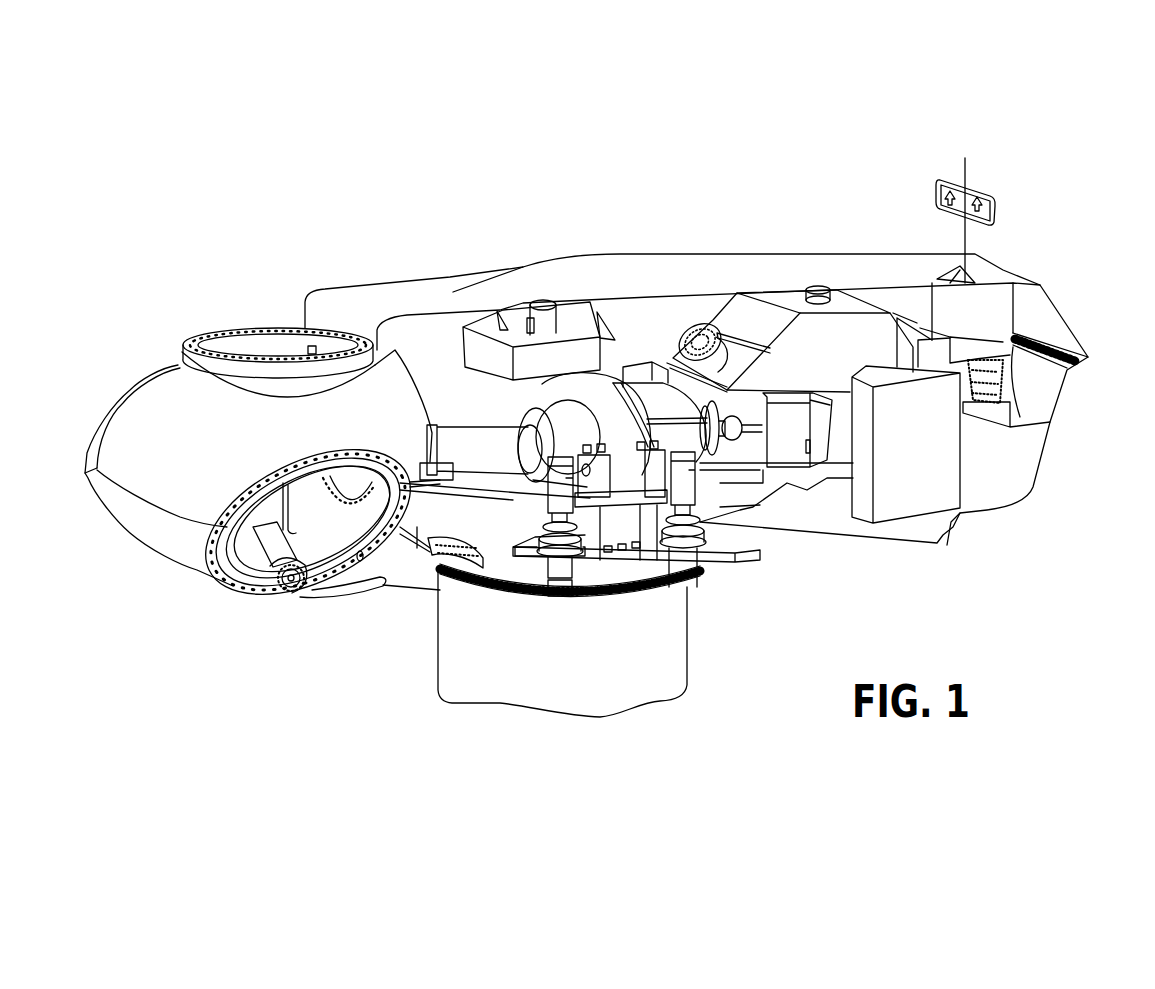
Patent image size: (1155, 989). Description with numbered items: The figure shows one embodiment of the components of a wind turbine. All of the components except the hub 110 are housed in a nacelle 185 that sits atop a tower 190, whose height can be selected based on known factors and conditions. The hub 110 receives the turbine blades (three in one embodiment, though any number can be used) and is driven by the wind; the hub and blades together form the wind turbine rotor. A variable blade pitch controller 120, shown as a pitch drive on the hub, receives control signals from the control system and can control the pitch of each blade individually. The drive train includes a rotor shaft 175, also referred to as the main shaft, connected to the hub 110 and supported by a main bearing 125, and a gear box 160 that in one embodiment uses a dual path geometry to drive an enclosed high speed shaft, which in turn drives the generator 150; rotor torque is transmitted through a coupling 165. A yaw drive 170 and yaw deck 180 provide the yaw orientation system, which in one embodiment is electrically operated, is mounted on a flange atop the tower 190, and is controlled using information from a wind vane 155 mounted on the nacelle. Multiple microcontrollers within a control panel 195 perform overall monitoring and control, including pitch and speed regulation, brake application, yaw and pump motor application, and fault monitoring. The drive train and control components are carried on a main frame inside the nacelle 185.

The hub 110 is at (228, 378).
The variable blade pitch controller 120 is at (267, 594).
The main bearing 125 is at (432, 430).
The generator 150 is at (785, 457).
The wind vane 155 is at (1000, 198).
The gear box 160 is at (622, 457).
The coupling 165 is at (716, 413).
The yaw drive 170 is at (556, 563).
The rotor shaft 175 is at (877, 545).
The yaw deck 180 is at (722, 555).
The nacelle 185 is at (372, 300).
The tower 190 is at (654, 687).
The control panel 195 is at (897, 403).